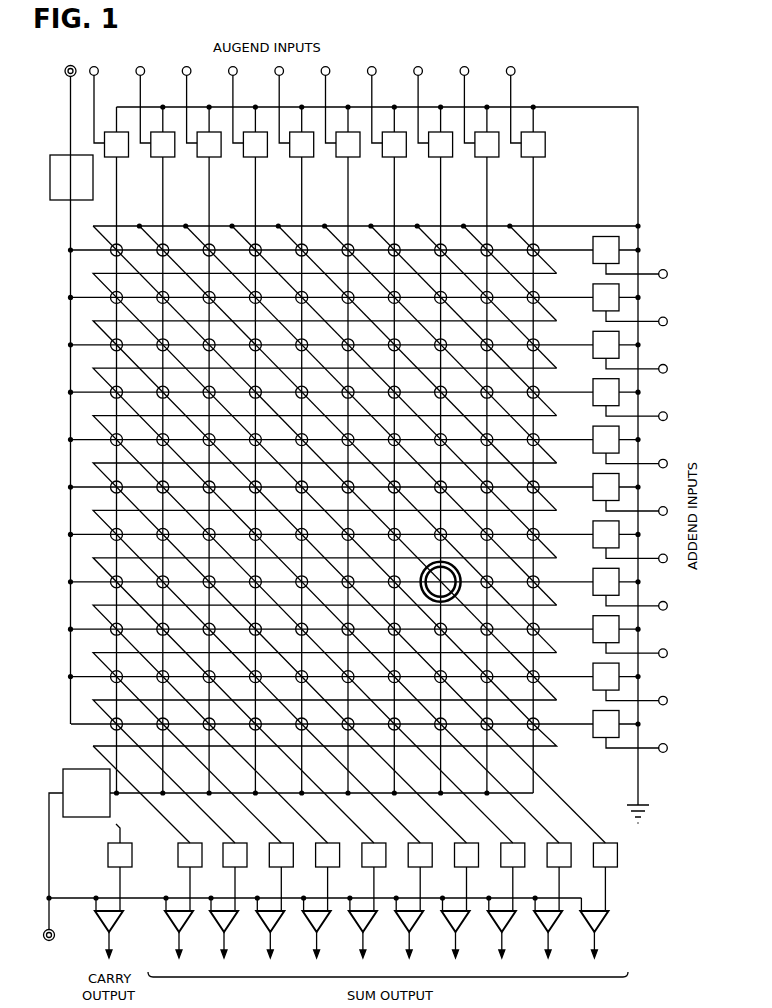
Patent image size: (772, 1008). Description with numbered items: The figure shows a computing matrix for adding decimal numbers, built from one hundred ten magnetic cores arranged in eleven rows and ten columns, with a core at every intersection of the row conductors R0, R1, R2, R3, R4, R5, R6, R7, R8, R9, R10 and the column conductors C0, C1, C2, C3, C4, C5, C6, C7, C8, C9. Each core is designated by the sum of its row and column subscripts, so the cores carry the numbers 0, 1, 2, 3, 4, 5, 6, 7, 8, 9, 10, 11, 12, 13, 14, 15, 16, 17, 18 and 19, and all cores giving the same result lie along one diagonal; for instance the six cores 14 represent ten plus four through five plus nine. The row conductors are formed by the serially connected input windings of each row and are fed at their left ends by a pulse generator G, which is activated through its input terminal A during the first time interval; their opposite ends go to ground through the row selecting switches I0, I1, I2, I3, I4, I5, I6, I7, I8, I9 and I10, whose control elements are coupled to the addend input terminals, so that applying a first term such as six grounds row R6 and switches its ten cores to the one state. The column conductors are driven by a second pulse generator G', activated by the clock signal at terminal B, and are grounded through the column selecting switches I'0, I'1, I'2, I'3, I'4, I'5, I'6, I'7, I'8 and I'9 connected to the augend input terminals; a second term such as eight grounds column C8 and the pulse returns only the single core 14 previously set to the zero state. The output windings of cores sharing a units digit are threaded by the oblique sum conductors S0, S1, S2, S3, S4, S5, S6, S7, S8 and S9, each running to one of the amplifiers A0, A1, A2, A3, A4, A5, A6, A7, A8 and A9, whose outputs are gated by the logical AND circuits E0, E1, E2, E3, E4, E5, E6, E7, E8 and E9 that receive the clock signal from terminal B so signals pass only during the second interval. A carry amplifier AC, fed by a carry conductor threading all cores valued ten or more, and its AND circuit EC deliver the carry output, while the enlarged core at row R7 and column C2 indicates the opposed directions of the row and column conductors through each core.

The activating input terminal A is at (63, 393).
The clock signal input terminal B is at (42, 920).
The pulse generator G is at (71, 177).
The pulse generator G' is at (291, 833).
The row conductor R0 is at (88, 247).
The row conductor R1 is at (88, 294).
The row conductor R2 is at (88, 342).
The row conductor R3 is at (88, 389).
The row conductor R4 is at (88, 437).
The row conductor R5 is at (88, 484).
The row conductor R6 is at (88, 531).
The row conductor R7 is at (88, 579).
The row conductor R8 is at (88, 626).
The row conductor R9 is at (88, 674).
The row conductor R10 is at (88, 721).
The column conductor C0 is at (534, 198).
The column conductor C1 is at (488, 198).
The column conductor C2 is at (442, 198).
The column conductor C3 is at (395, 198).
The column conductor C4 is at (349, 198).
The column conductor C5 is at (303, 198).
The column conductor C6 is at (256, 198).
The column conductor C7 is at (210, 198).
The column conductor C8 is at (164, 198).
The column conductor C9 is at (118, 198).
The column selecting switch I'0 is at (534, 124).
The column selecting switch I'1 is at (488, 124).
The column selecting switch I'2 is at (442, 124).
The column selecting switch I'3 is at (396, 124).
The column selecting switch I'4 is at (349, 124).
The column selecting switch I'5 is at (303, 124).
The column selecting switch I'6 is at (257, 124).
The column selecting switch I'7 is at (210, 124).
The column selecting switch I'8 is at (164, 124).
The column selecting switch I'9 is at (118, 124).
The row selecting switch I0 is at (592, 259).
The row selecting switch I1 is at (592, 306).
The row selecting switch I2 is at (592, 354).
The row selecting switch I3 is at (592, 401).
The row selecting switch I4 is at (592, 449).
The row selecting switch I5 is at (592, 496).
The row selecting switch I6 is at (592, 543).
The row selecting switch I7 is at (592, 591).
The row selecting switch I8 is at (592, 638).
The row selecting switch I9 is at (592, 686).
The row selecting switch I10 is at (592, 733).
The sum output conductor S0 is at (130, 786).
The sum output conductor S1 is at (548, 786).
The sum output conductor S2 is at (502, 786).
The sum output conductor S3 is at (455, 786).
The sum output conductor S4 is at (409, 786).
The sum output conductor S5 is at (363, 786).
The sum output conductor S6 is at (316, 786).
The sum output conductor S7 is at (270, 786).
The sum output conductor S8 is at (224, 786).
The sum output conductor S9 is at (178, 786).
The carry amplifier AC is at (108, 854).
The amplifier A0 is at (178, 854).
The amplifier A1 is at (593, 854).
The amplifier A2 is at (547, 854).
The amplifier A3 is at (501, 854).
The amplifier A4 is at (454, 854).
The amplifier A5 is at (408, 854).
The amplifier A6 is at (362, 854).
The amplifier A7 is at (316, 854).
The amplifier A8 is at (269, 854).
The amplifier A9 is at (223, 854).
The logical AND circuit EC is at (99, 923).
The logical AND circuit E0 is at (169, 923).
The logical AND circuit E1 is at (584, 923).
The logical AND circuit E2 is at (538, 923).
The logical AND circuit E3 is at (492, 923).
The logical AND circuit E4 is at (446, 923).
The logical AND circuit E5 is at (399, 923).
The logical AND circuit E6 is at (353, 923).
The logical AND circuit E7 is at (307, 923).
The logical AND circuit E8 is at (260, 923).
The logical AND circuit E9 is at (214, 923).
The magnetic core 0 is at (533, 249).
The magnetic cores 1 is at (510, 273).
The magnetic cores 2 is at (486, 297).
The magnetic cores 3 is at (464, 321).
The magnetic cores 4 is at (441, 344).
The magnetic cores 5 is at (417, 368).
The magnetic cores 6 is at (394, 392).
The magnetic cores 7 is at (371, 415).
The magnetic cores 8 is at (347, 439).
The magnetic cores 9 is at (324, 463).
The magnetic cores 10 is at (326, 509).
The magnetic cores 11 is at (324, 525).
The magnetic cores 12 is at (324, 549).
The magnetic cores 13 is at (324, 573).
The magnetic cores 14 is at (324, 596).
The magnetic cores 15 is at (324, 620).
The magnetic cores 16 is at (324, 644).
The magnetic cores 17 is at (324, 667).
The magnetic cores 18 is at (324, 691).
The magnetic core 19 is at (324, 715).